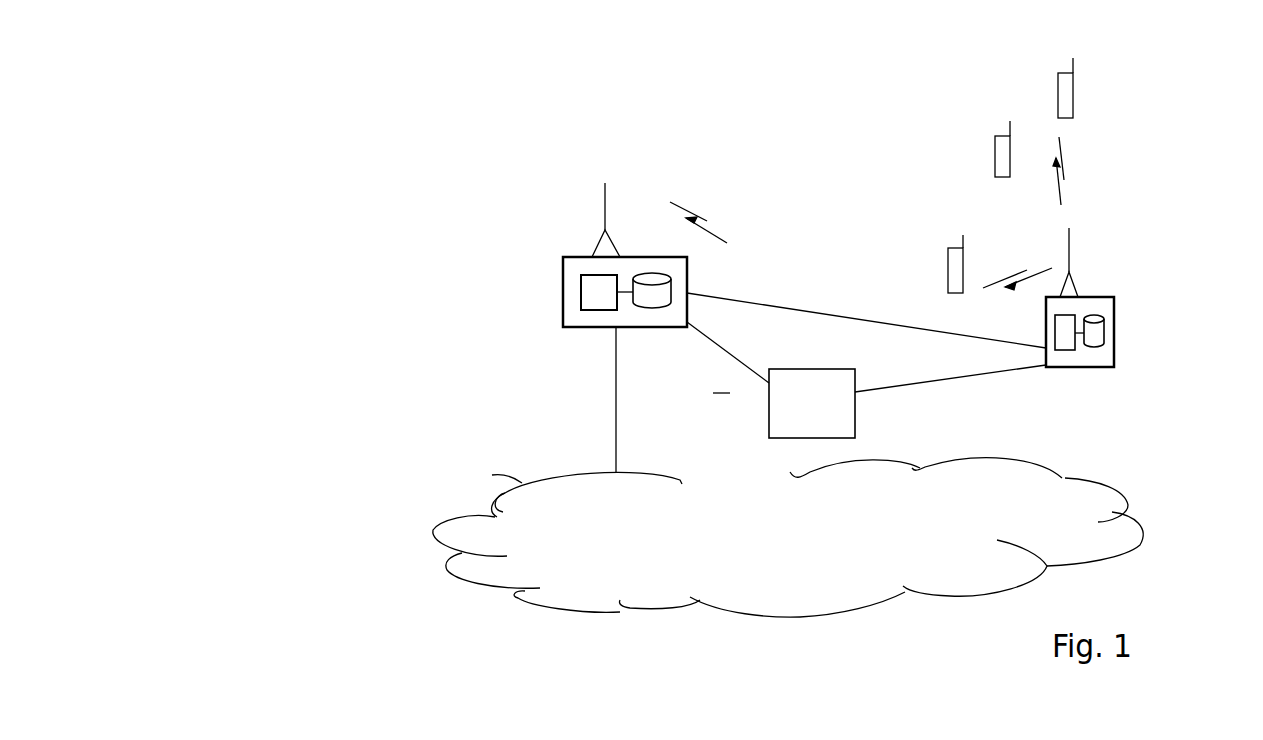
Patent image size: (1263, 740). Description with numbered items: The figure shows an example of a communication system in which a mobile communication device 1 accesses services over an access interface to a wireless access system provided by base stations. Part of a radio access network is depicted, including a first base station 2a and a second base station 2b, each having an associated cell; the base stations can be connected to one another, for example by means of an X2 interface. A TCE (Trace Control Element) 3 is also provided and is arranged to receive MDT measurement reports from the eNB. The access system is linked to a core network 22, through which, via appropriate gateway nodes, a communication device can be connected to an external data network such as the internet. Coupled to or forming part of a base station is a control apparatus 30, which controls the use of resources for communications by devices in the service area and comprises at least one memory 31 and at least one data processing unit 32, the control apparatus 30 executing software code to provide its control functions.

The mobile communication device 1 is at (1062, 103).
The first base station 2a is at (522, 205).
The second base station 2b is at (1103, 358).
The TCE (Trace Control Element) 3 is at (812, 403).
The core network 22 is at (719, 534).
The control apparatus 30 is at (563, 258).
The memory 31 is at (637, 310).
The data processing unit 32 is at (580, 298).